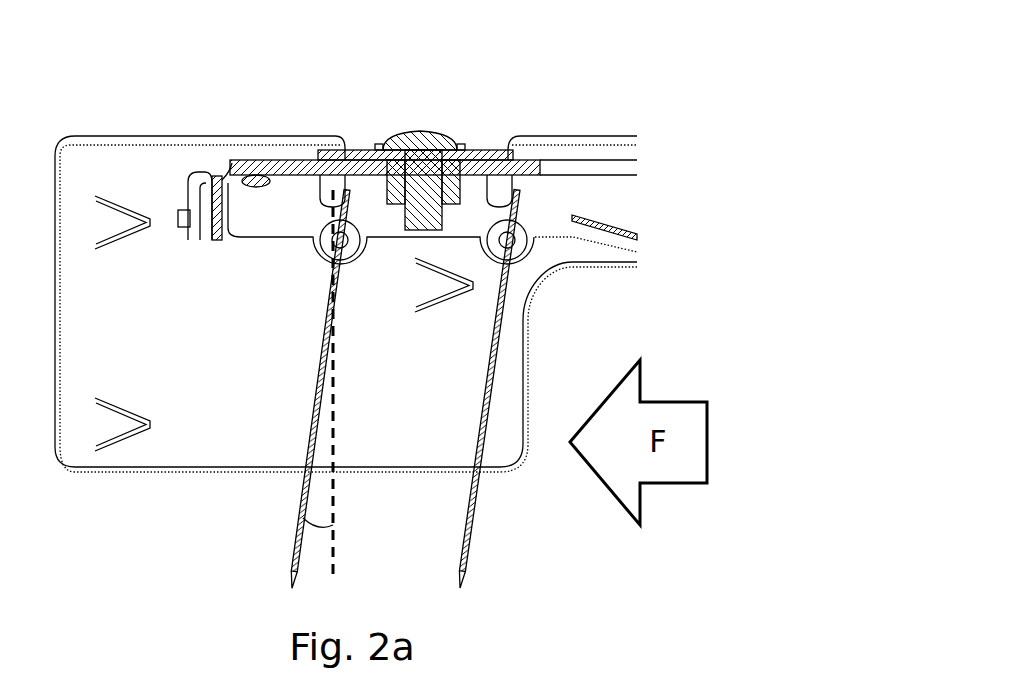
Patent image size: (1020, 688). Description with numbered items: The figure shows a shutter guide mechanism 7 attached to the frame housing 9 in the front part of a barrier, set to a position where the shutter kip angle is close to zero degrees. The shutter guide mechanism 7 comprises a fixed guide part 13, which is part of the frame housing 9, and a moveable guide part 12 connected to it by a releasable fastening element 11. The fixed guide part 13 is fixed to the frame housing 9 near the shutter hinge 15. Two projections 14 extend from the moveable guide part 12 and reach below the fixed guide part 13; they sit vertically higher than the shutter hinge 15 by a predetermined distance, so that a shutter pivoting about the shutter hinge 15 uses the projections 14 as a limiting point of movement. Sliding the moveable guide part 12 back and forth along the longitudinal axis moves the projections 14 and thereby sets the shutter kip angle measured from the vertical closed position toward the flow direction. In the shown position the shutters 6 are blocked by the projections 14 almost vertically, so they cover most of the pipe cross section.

The needles 6 is at (296, 497).
The shutter guide mechanism 7 is at (456, 125).
The frame housing 9 is at (572, 200).
The releasable fastening element 11 is at (428, 118).
The moveable guide part 12 is at (490, 148).
The fixed guide part 13 is at (300, 158).
The projections 14 is at (320, 188).
The shutter hinge 15 is at (521, 241).